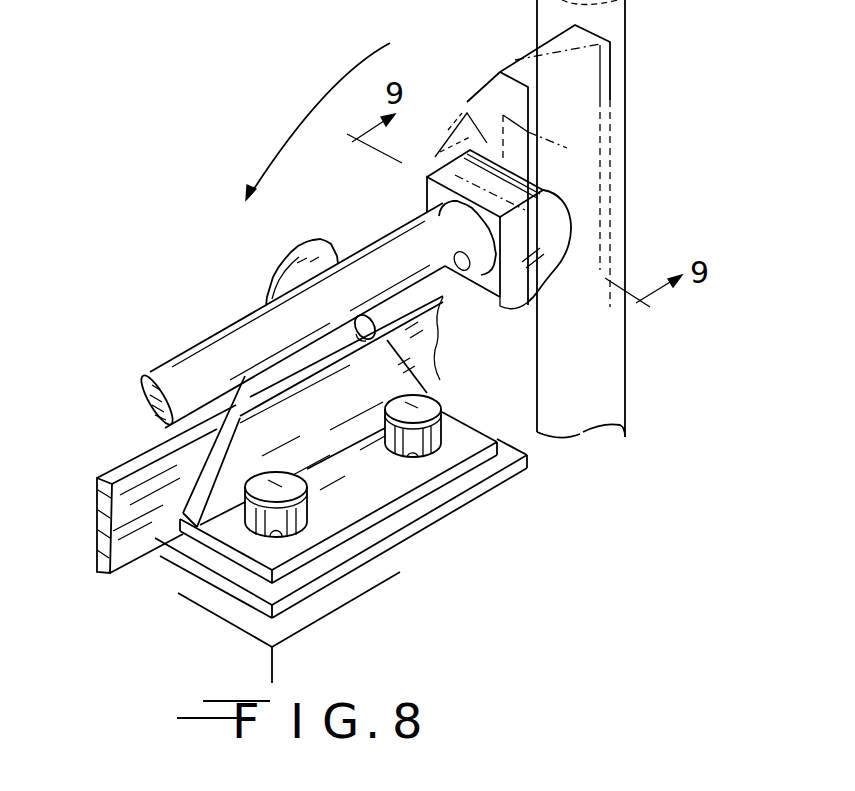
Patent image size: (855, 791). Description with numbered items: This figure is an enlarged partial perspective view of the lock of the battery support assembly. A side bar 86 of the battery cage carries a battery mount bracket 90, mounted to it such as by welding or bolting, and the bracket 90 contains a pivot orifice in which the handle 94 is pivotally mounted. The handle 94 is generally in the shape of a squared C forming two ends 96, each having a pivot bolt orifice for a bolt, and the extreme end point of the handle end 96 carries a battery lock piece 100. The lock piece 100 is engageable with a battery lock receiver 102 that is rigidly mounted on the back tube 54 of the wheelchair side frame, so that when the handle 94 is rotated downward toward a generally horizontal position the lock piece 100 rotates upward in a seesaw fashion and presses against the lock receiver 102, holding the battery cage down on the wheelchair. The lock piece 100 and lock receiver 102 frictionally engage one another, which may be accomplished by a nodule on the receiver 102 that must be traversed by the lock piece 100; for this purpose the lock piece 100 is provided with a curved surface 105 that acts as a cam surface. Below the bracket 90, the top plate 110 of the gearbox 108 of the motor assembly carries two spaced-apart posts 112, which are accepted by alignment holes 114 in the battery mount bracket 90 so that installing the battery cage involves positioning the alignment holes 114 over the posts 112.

The back tube 54 is at (627, 73).
The battery lock receiver 102 is at (610, 97).
The curved surface 105 is at (481, 153).
The battery lock piece 100 is at (600, 193).
The handle 94 is at (208, 338).
The handle end 96 is at (440, 226).
The battery mount bracket 90 is at (447, 340).
The top plate 110 is at (522, 447).
The gearbox 108 is at (245, 647).
The side bar 86 is at (105, 568).
The post 112 is at (430, 402).
The alignment hole 114 is at (411, 457).